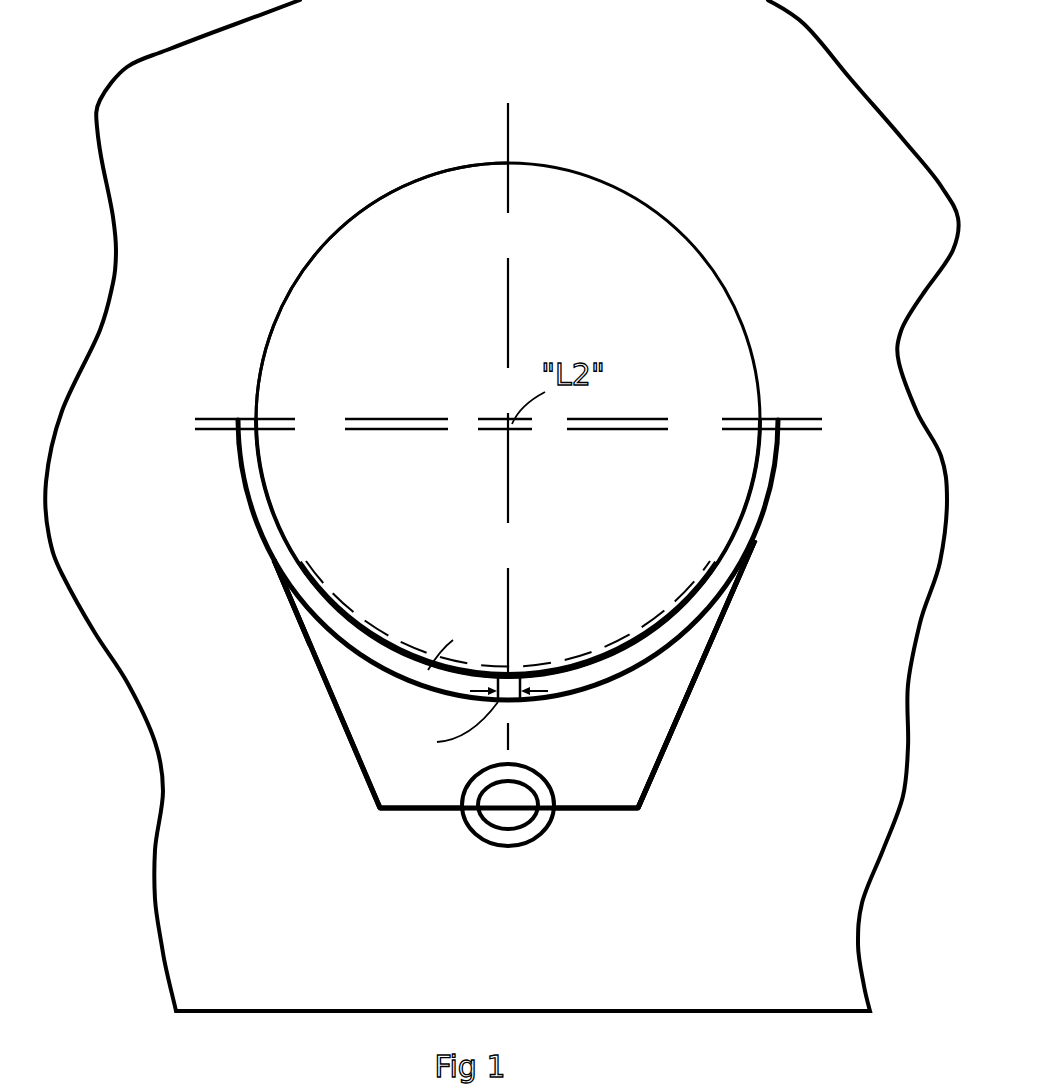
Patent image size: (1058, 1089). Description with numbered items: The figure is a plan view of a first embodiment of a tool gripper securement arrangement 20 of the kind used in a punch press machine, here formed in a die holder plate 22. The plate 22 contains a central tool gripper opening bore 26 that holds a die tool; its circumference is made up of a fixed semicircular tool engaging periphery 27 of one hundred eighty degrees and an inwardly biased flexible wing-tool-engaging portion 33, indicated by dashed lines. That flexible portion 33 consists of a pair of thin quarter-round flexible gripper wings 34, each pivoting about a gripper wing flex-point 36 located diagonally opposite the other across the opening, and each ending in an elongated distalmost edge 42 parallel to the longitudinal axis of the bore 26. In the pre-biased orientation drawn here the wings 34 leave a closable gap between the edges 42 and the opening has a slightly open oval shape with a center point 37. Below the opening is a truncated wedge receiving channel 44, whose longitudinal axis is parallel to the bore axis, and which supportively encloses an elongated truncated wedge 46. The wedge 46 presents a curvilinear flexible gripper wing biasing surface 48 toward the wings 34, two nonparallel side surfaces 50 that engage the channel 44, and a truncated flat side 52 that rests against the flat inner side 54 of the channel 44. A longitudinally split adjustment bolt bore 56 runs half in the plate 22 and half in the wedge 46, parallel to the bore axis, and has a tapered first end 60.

The tool gripper securement arrangement 20 is at (814, 548).
The die holder plate 22 is at (836, 101).
The tool gripper opening bore 26 is at (672, 240).
The semicircular tool engaging periphery 27 is at (335, 238).
The flexible wing-tool-engaging portion 33 is at (345, 606).
The flexible gripper wings 34 is at (356, 637).
The gripper wing flex-point 36 is at (246, 418).
The center point 37 is at (505, 432).
The elongated distalmost edge 42 is at (520, 688).
The truncated wedge receiving channel 44 is at (660, 752).
The elongated truncated wedge 46 is at (662, 688).
The curvilinear flexible gripper wing biasing surface 48 is at (283, 600).
The nonparallel side surfaces 50 is at (336, 722).
The truncated flat side 52 is at (600, 820).
The flat inner side 54 is at (392, 800).
The adjustment bolt bore 56 is at (530, 815).
The tapered first end 60 is at (478, 786).